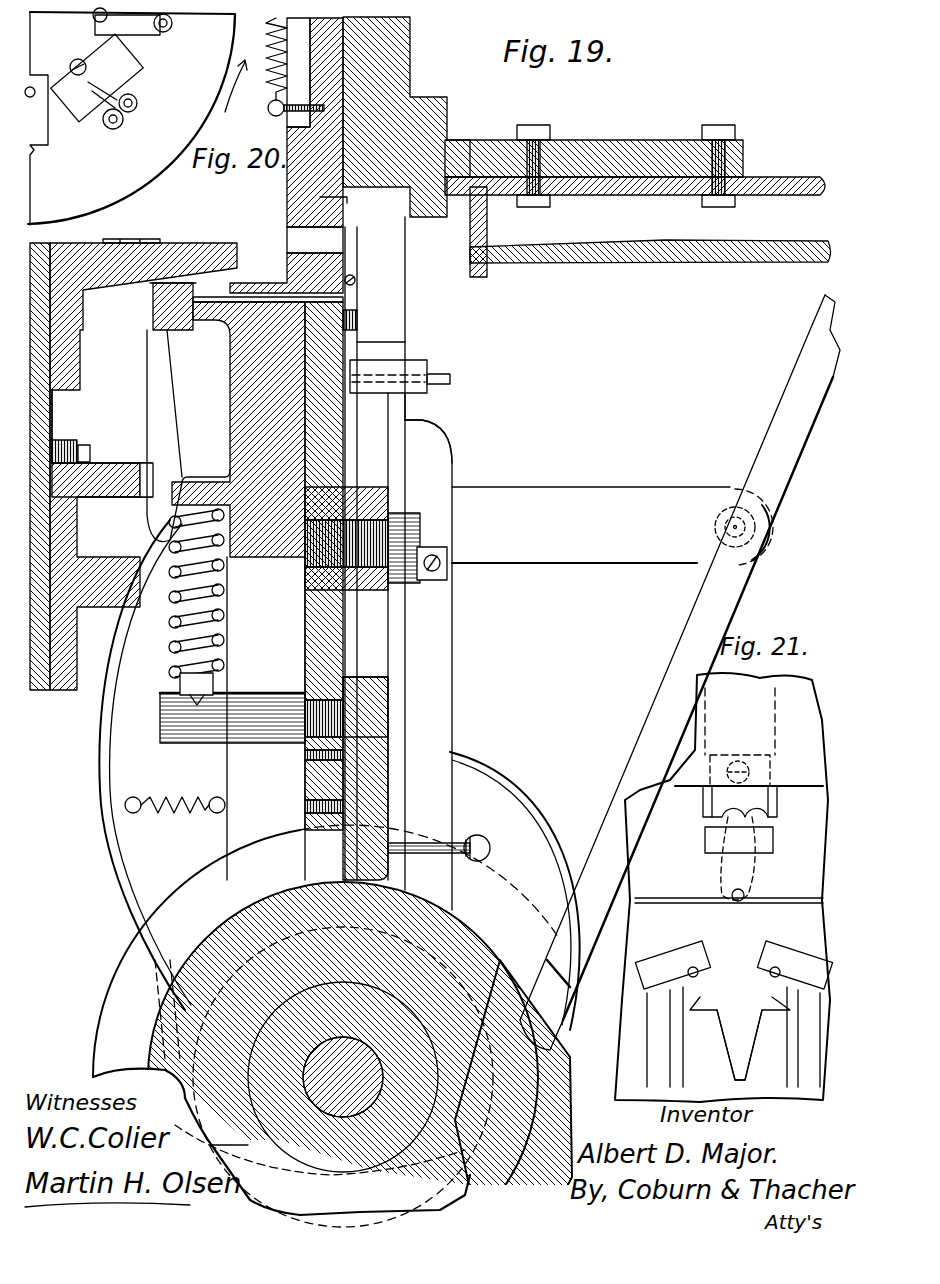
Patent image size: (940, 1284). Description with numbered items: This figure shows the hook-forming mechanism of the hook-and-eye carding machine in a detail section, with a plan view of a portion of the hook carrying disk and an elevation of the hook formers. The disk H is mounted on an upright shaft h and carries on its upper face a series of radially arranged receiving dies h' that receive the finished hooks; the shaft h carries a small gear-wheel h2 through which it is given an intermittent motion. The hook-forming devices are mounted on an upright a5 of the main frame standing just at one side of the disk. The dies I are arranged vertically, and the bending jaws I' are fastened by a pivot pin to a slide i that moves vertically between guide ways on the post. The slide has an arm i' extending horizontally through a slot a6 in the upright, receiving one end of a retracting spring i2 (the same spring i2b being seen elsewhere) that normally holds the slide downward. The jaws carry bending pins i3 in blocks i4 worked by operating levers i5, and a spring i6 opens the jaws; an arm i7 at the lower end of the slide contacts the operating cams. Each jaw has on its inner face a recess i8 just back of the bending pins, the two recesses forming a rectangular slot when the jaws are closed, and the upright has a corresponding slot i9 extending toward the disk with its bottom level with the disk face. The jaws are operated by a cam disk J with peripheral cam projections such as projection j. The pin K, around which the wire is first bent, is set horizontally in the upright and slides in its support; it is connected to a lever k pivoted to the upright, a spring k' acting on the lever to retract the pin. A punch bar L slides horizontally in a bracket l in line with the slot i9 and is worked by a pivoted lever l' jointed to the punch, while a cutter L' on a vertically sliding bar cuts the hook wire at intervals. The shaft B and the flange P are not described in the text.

In FIG. 20, the disk H is at (136, 118).
In FIG. 19, the disk H is at (133, 466).
In FIG. 19, the upright shaft h is at (55, 426).
In FIG. 20, the dies h' is at (132, 44).
In FIG. 19, the dies h' is at (131, 228).
In FIG. 19, the gear-wheel h2 is at (125, 451).
In FIG. 19, the dies I is at (368, 453).
In FIG. 21, the dies I is at (741, 758).
In FIG. 19, the bending jaws I' is at (392, 651).
In FIG. 21, the bending jaws I' is at (726, 1045).
In FIG. 19, the slide i is at (300, 566).
In FIG. 19, the arm i' is at (232, 708).
In FIG. 19, the retracting spring i2 is at (168, 657).
In FIG. 19, the retracting spring i2b is at (508, 886).
In FIG. 19, the bending pins i3 is at (451, 380).
In FIG. 21, the bending pins i3 is at (700, 970).
In FIG. 19, the blocks i4 is at (415, 374).
In FIG. 21, the blocks i4 is at (733, 1014).
In FIG. 19, the operating levers i5 is at (418, 448).
In FIG. 19, the spring i6 is at (470, 838).
In FIG. 19, the arm i7 is at (363, 697).
In FIG. 19, the recess i8 is at (407, 398).
In FIG. 19, the slot i9 is at (297, 240).
In FIG. 21, the slot i9 is at (700, 1003).
In FIG. 19, the pin K is at (262, 280).
In FIG. 19, the lever k is at (223, 306).
In FIG. 19, the spring k' is at (175, 781).
In FIG. 21, the spring k' is at (729, 860).
In FIG. 19, the punch bar L is at (650, 246).
In FIG. 19, the cutter L' is at (365, 303).
In FIG. 19, the bracket l is at (635, 166).
In FIG. 19, the pivoted lever l' is at (646, 672).
In FIG. 19, the upright a5 is at (229, 374).
In FIG. 19, the slot a6 is at (266, 718).
In FIG. 19, the cam disk J is at (360, 1077).
In FIG. 19, the peripheral cam projection j is at (558, 1042).
In FIG. 19, the shaft B is at (343, 1077).
In FIG. 19, the flange P is at (210, 1145).